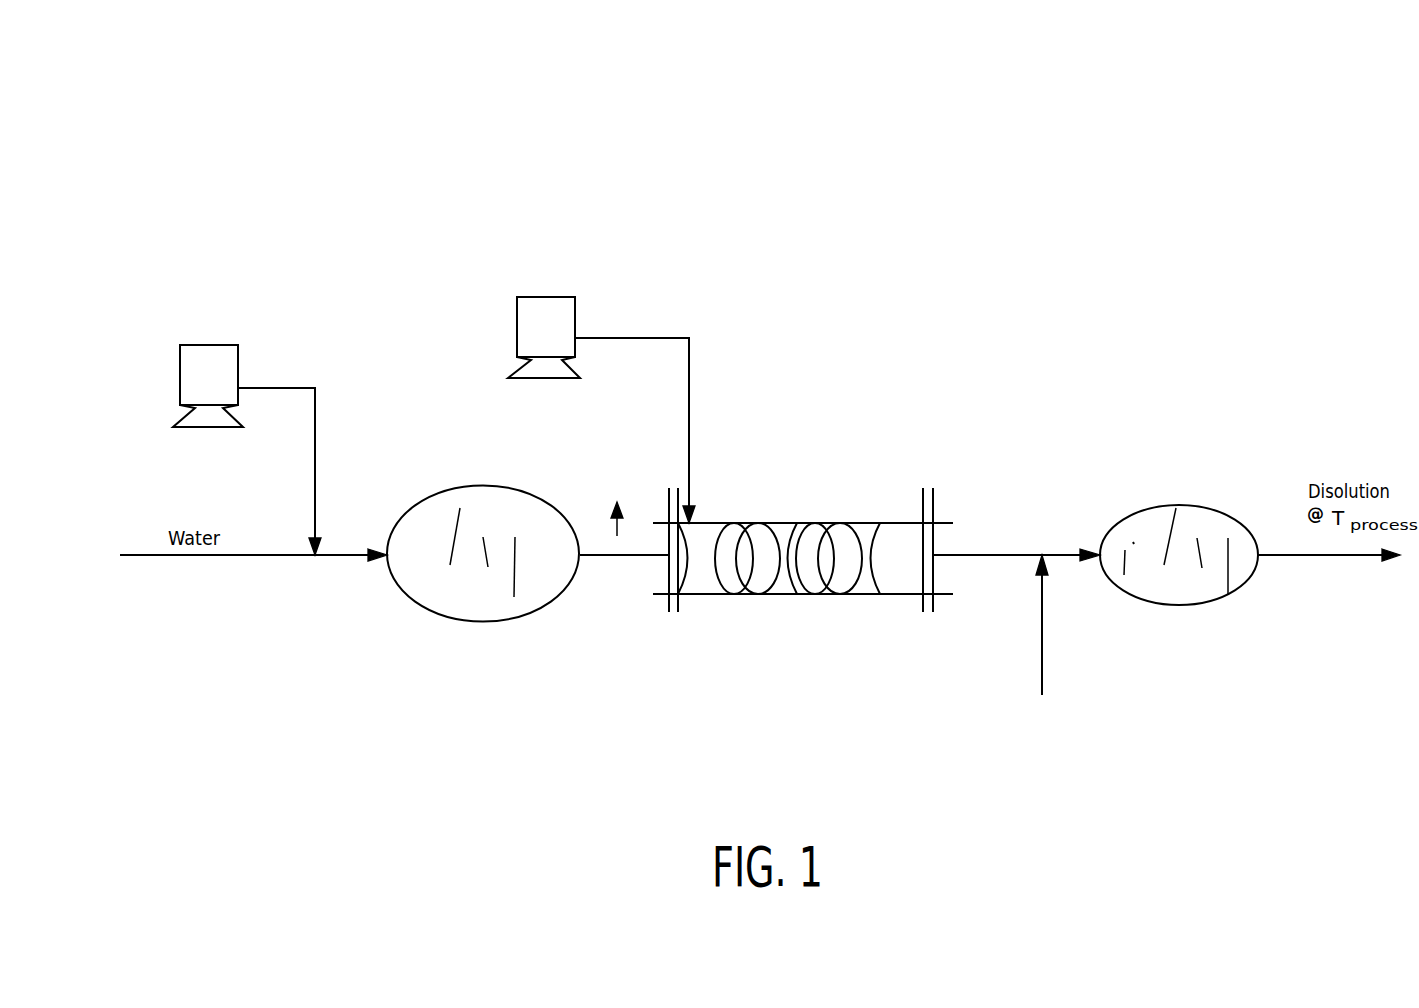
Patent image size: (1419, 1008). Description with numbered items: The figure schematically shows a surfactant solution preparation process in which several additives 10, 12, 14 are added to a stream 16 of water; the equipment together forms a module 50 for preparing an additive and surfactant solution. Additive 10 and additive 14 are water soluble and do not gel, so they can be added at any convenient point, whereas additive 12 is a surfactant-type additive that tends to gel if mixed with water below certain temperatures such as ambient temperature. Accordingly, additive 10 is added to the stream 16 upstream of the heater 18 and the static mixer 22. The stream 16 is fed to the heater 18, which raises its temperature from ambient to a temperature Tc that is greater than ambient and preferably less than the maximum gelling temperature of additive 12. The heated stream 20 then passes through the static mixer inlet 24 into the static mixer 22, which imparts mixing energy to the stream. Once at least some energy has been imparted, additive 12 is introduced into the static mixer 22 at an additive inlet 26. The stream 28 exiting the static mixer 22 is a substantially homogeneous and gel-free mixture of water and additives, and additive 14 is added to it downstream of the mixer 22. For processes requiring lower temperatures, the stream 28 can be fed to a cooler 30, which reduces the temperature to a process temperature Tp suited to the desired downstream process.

The additive 10 is at (280, 286).
The additive 12 is at (582, 250).
The additive 14 is at (1032, 764).
The stream of water 16 is at (259, 553).
The heater 18 is at (495, 485).
The heated stream 20 is at (628, 558).
The static mixer 22 is at (797, 522).
The static mixer inlet 24 is at (661, 542).
The additive inlet 26 is at (697, 522).
The stream exiting static mixer 28 is at (988, 553).
The cooler 30 is at (1190, 605).
The module 50 is at (915, 358).